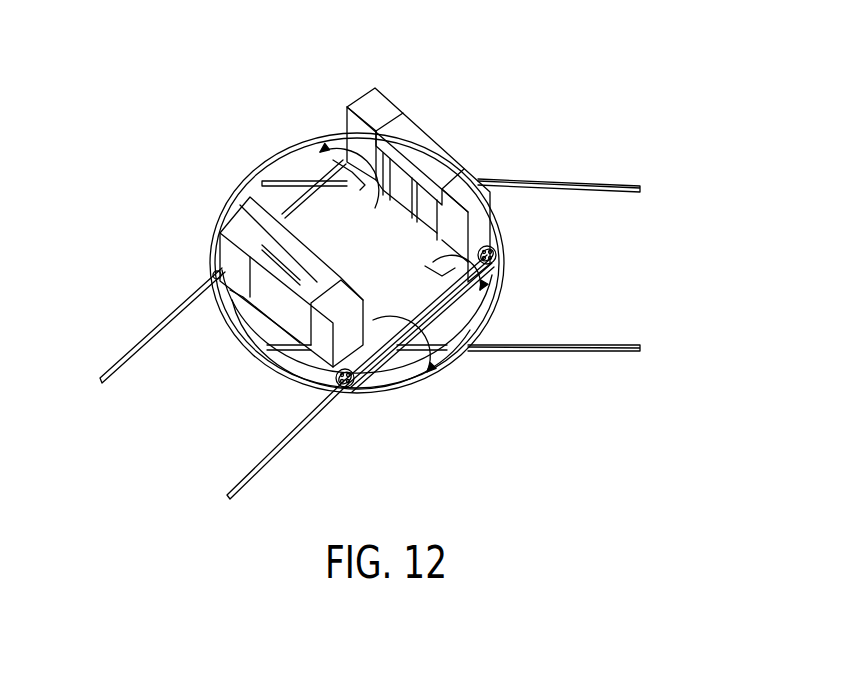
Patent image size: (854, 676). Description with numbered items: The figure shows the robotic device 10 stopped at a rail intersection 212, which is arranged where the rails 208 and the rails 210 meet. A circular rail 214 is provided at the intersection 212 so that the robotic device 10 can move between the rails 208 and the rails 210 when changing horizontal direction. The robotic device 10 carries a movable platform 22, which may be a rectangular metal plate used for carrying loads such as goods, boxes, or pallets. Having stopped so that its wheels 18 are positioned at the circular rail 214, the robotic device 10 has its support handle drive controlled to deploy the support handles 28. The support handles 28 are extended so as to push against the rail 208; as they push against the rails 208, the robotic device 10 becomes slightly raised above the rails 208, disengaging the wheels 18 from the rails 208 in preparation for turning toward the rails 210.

The robotic device 10 is at (484, 82).
The movable platform 22 is at (316, 218).
The support handles 28 is at (432, 270).
The wheels 18 is at (497, 256).
The rails 208 is at (162, 318).
The rails 210 is at (586, 178).
The rail intersection 212 is at (470, 304).
The circular rail 214 is at (442, 372).